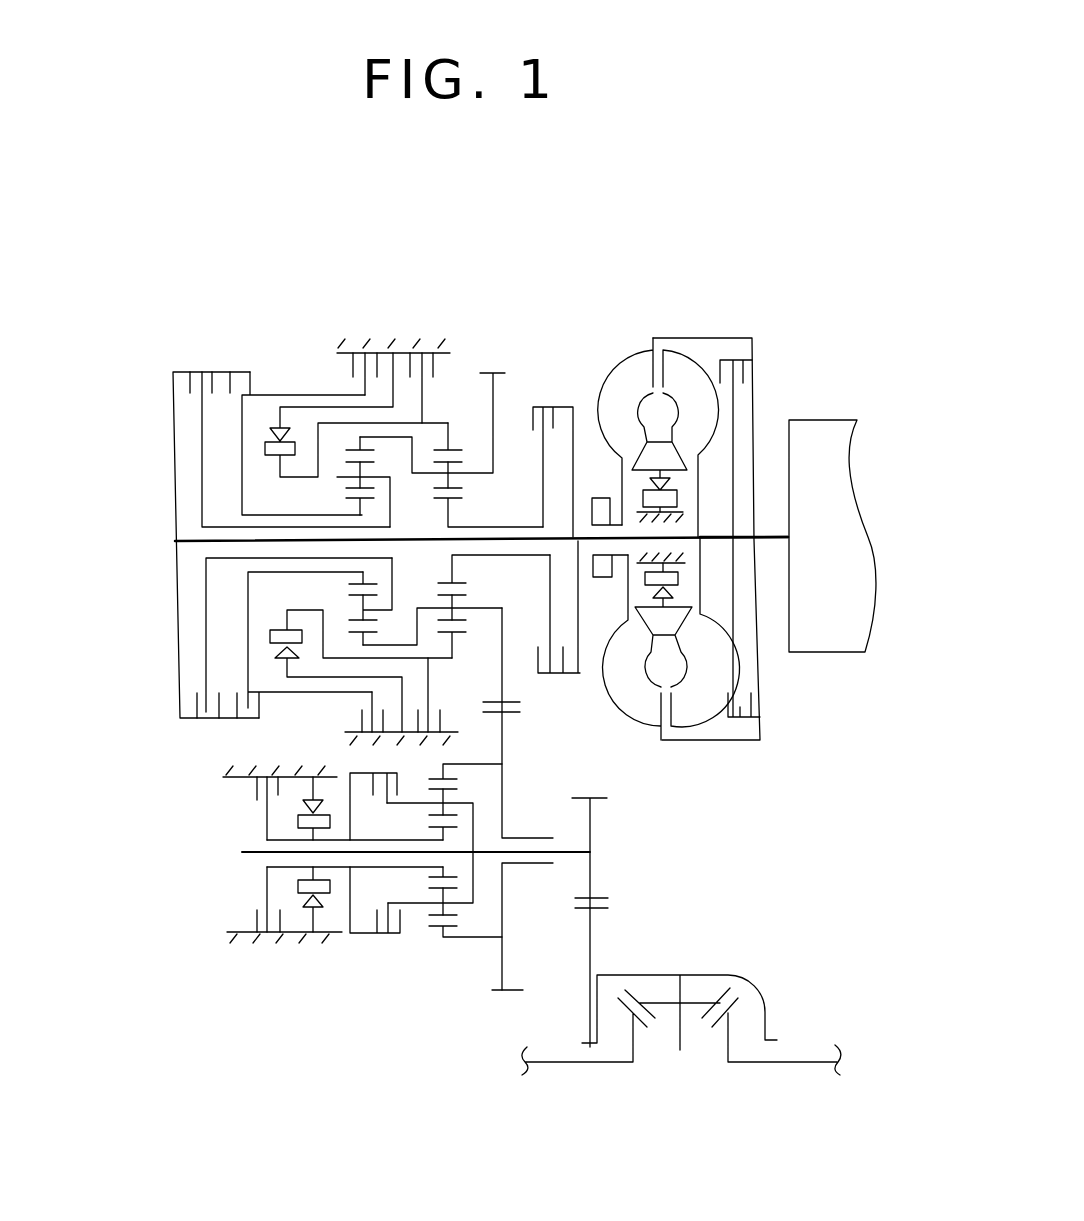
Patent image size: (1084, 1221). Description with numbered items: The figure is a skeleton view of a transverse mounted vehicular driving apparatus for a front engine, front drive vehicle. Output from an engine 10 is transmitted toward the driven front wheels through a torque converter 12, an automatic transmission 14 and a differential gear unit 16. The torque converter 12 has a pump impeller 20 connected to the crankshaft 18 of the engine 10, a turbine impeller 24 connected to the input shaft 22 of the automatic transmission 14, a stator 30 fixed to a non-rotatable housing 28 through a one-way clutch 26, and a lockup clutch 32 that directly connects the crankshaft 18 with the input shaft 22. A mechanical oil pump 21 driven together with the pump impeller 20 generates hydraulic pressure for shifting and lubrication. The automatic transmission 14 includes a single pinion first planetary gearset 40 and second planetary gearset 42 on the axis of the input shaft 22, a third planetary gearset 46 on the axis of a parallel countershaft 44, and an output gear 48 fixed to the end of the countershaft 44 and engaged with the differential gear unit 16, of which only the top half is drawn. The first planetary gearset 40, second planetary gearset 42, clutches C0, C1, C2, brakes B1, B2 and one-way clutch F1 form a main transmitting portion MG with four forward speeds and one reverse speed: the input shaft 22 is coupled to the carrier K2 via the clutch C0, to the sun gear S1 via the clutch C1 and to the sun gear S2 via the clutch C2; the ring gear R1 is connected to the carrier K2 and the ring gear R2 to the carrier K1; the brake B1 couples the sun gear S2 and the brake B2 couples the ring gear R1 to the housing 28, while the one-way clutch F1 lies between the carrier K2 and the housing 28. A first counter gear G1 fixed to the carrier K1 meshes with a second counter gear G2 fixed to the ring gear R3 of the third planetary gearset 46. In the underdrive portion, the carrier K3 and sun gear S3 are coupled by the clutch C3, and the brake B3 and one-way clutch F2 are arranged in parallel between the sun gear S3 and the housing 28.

The engine 10 is at (803, 467).
The torque converter 12 is at (655, 307).
The automatic transmission 14 is at (495, 283).
The differential gear unit 16 is at (670, 940).
The crankshaft 18 is at (772, 540).
The pump impeller 20 is at (643, 367).
The mechanical oil pump 21 is at (602, 502).
The input shaft 22 is at (518, 541).
The turbine impeller 24 is at (693, 700).
The one-way clutch 26 is at (627, 653).
The housing 28 is at (398, 344).
The stator 30 is at (655, 460).
The lockup clutch 32 is at (733, 360).
The first planetary gearset 40 is at (450, 390).
The second planetary gearset 42 is at (343, 440).
The countershaft 44 is at (255, 852).
The third planetary gearset 46 is at (435, 937).
The output gear 48 is at (600, 898).
The clutch C0 is at (192, 372).
The clutch C1 is at (550, 408).
The clutch C2 is at (242, 370).
The clutch C3 is at (397, 933).
The brake B1 is at (345, 362).
The brake B2 is at (437, 360).
The brake B3 is at (260, 920).
The one-way clutch F1 is at (265, 450).
The one-way clutch F2 is at (330, 900).
The carrier K1 is at (470, 477).
The carrier K2 is at (337, 477).
The carrier K3 is at (458, 802).
The ring gear R1 is at (450, 448).
The ring gear R2 is at (378, 448).
The ring gear R3 is at (433, 775).
The sun gear S1 is at (450, 498).
The sun gear S2 is at (357, 510).
The sun gear S3 is at (430, 827).
The first counter gear G1 is at (517, 695).
The second counter gear G2 is at (523, 990).
The main transmitting portion MG is at (173, 668).